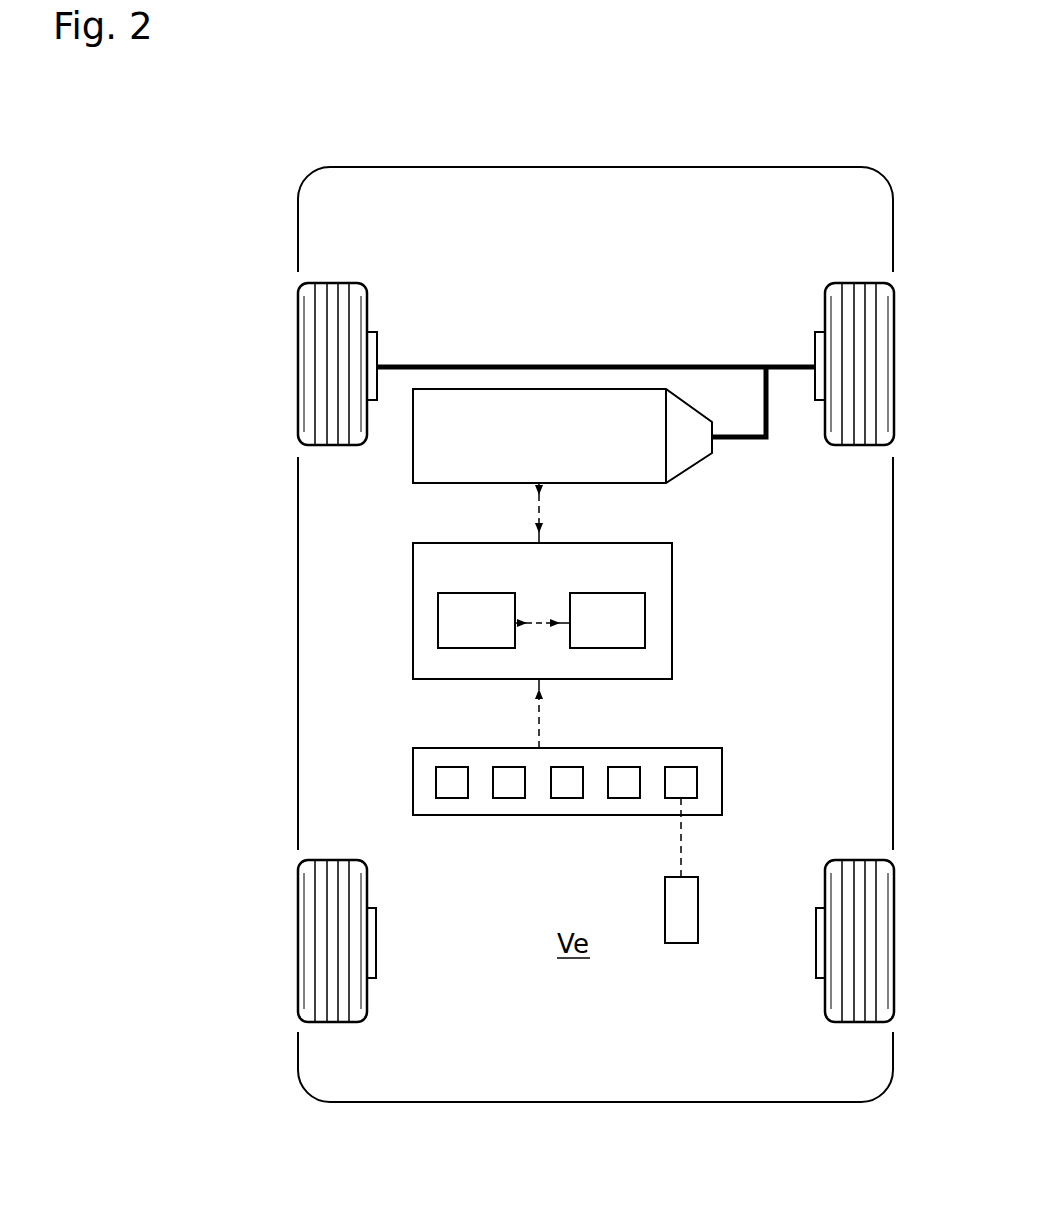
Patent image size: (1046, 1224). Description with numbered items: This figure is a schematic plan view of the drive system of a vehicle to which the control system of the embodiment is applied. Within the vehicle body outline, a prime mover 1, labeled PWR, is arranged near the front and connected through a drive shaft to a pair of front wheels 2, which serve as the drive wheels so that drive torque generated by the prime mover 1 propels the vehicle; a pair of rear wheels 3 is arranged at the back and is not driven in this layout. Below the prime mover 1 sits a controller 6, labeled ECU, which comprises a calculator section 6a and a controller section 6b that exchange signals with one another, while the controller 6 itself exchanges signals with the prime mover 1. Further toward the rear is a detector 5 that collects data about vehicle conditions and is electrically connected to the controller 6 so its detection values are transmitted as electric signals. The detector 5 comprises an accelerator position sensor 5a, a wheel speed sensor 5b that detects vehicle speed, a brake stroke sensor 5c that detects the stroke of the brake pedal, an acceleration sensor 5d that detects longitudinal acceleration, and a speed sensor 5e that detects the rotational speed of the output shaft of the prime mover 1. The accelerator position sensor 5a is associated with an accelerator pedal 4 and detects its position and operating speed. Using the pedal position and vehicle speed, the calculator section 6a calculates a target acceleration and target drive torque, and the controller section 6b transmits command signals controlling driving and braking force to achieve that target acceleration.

The prime mover 1 is at (422, 463).
The front wheels 2 is at (313, 360).
The rear wheels 3 is at (310, 944).
The accelerator pedal 4 is at (685, 945).
The detector 5 is at (533, 783).
The accelerator position sensor 5a is at (683, 767).
The wheel speed sensor 5b is at (623, 798).
The brake stroke sensor 5c is at (568, 798).
The acceleration sensor 5d is at (507, 798).
The speed sensor 5e is at (452, 798).
The controller 6 is at (517, 636).
The calculator section 6a is at (468, 648).
The controller section 6b is at (598, 648).